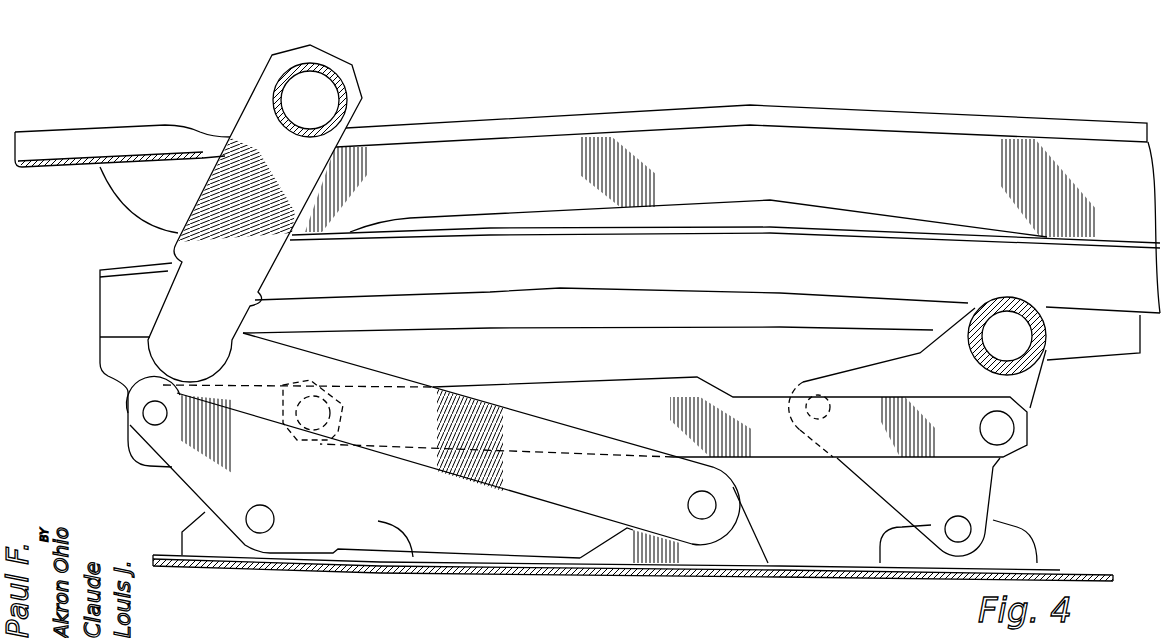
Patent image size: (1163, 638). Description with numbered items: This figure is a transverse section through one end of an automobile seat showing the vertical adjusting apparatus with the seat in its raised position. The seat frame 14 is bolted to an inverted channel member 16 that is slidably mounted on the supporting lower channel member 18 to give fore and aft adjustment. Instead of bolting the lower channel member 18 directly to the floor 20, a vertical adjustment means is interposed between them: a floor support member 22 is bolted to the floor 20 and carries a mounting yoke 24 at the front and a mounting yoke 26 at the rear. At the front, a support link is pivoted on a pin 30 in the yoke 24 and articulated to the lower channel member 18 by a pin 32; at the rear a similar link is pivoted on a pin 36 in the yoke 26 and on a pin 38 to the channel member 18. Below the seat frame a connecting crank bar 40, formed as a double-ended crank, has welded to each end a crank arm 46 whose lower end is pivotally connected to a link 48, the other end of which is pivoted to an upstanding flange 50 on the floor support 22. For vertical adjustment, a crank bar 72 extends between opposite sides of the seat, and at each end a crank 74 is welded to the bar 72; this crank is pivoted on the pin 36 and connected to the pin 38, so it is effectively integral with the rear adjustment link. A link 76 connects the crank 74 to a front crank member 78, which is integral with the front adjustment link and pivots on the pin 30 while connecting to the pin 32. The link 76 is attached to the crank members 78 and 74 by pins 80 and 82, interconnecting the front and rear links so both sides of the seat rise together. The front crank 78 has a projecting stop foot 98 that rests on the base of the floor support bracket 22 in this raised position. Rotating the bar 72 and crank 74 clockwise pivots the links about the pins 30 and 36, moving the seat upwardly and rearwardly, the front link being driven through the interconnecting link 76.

The frame 14 is at (480, 127).
The inverted channel member 16 is at (725, 245).
The lower channel member 18 is at (112, 312).
The floor 20 is at (388, 567).
The floor support member 22 is at (775, 569).
The mounting yoke 24 is at (205, 540).
The mounting yoke 26 is at (1013, 540).
The pin 30 is at (263, 530).
The pin 32 is at (150, 410).
The pin 36 is at (963, 528).
The pin 38 is at (820, 396).
The connecting crank bar 40 is at (342, 106).
The crank arm 46 is at (255, 133).
The link 48 is at (350, 373).
The upstanding flange 50 is at (752, 550).
The crank bar 72 is at (1023, 370).
The crank 74 is at (893, 378).
The link 76 is at (772, 410).
The crank member 78 is at (203, 490).
The pin 80 is at (318, 420).
The pin 82 is at (1000, 430).
The stop foot 98 is at (380, 520).